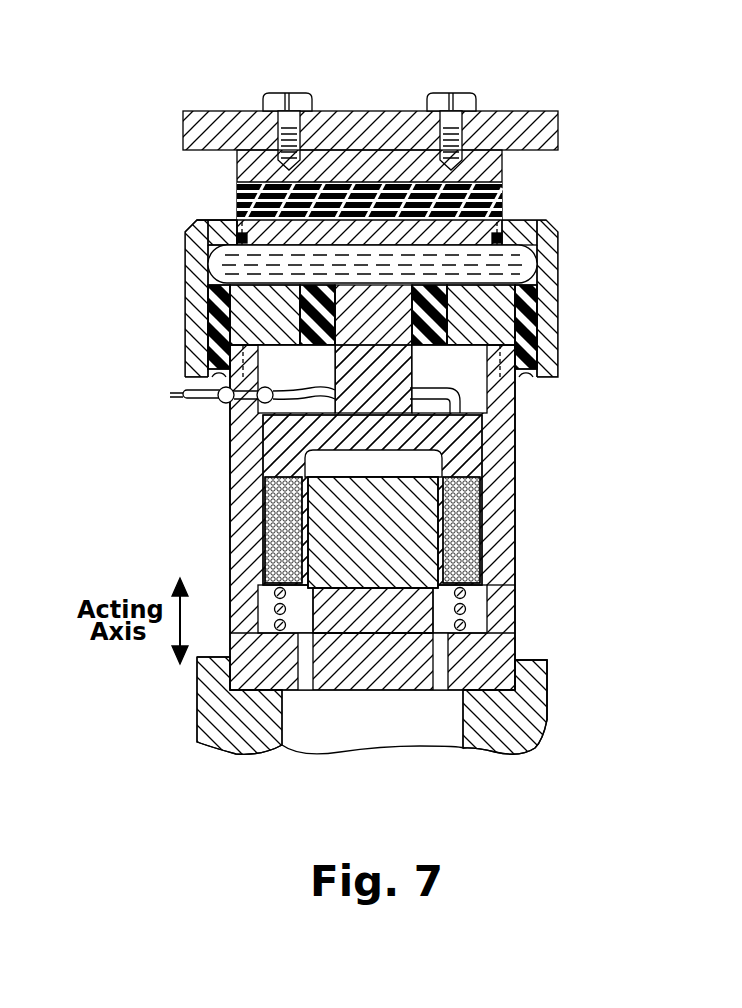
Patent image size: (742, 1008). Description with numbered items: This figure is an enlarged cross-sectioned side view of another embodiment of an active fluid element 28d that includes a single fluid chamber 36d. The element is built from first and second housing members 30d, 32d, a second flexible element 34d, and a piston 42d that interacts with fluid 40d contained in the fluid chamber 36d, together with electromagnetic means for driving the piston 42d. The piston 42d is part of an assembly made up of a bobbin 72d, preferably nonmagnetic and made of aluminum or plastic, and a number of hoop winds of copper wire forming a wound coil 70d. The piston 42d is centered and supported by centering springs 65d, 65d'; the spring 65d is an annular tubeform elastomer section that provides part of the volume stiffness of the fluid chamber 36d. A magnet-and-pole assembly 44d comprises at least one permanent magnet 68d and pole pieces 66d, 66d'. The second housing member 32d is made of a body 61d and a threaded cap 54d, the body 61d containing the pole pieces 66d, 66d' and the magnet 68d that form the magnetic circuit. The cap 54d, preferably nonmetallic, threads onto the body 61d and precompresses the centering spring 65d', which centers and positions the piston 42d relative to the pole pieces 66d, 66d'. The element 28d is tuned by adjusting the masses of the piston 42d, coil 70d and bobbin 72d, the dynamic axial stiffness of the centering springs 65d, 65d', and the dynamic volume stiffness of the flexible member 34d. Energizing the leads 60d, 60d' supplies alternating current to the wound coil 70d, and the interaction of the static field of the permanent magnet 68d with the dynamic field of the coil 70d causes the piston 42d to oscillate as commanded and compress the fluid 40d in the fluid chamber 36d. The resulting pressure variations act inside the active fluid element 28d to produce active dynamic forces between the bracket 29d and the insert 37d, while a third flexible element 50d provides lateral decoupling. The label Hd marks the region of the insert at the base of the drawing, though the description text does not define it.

The bracket 29d is at (345, 112).
The third flexible element 50d is at (503, 193).
The fluid 40d is at (225, 262).
The fluid chamber 36d is at (290, 279).
The piston 42d is at (535, 257).
The second flexible element 34d is at (217, 307).
The threaded cap 54d is at (500, 312).
The first housing member 30d is at (566, 361).
The lead 60d is at (163, 378).
The lead 60d' is at (135, 420).
The centering spring 65d is at (408, 387).
The active fluid element 28d is at (526, 456).
The bobbin 72d is at (270, 457).
The body 61d is at (515, 487).
The magnet-and-pole assembly 44d is at (222, 523).
The pole piece 66d is at (373, 532).
The wound coil 70d is at (487, 533).
The second housing member 32d is at (525, 578).
The permanent magnet 68d is at (394, 625).
The centering spring 65d' is at (451, 628).
The insert 37d is at (530, 677).
The pole piece 66d' is at (372, 655).
The base Hd is at (267, 660).